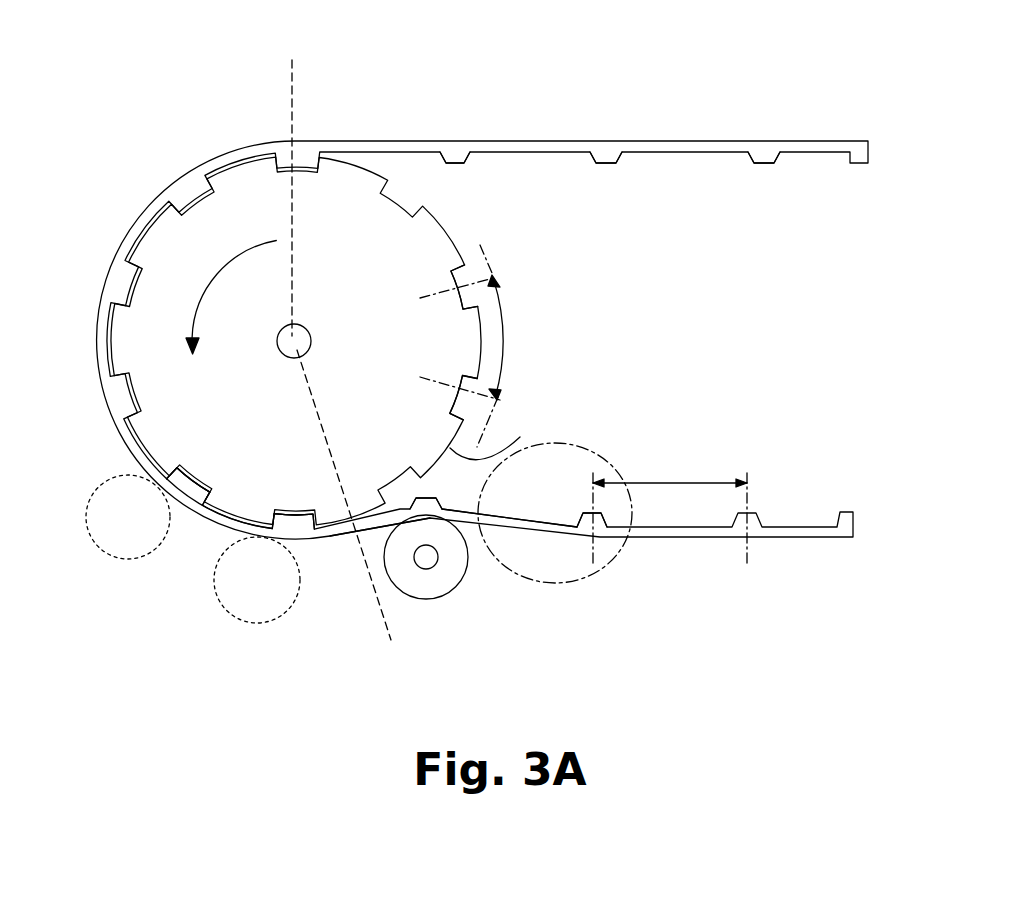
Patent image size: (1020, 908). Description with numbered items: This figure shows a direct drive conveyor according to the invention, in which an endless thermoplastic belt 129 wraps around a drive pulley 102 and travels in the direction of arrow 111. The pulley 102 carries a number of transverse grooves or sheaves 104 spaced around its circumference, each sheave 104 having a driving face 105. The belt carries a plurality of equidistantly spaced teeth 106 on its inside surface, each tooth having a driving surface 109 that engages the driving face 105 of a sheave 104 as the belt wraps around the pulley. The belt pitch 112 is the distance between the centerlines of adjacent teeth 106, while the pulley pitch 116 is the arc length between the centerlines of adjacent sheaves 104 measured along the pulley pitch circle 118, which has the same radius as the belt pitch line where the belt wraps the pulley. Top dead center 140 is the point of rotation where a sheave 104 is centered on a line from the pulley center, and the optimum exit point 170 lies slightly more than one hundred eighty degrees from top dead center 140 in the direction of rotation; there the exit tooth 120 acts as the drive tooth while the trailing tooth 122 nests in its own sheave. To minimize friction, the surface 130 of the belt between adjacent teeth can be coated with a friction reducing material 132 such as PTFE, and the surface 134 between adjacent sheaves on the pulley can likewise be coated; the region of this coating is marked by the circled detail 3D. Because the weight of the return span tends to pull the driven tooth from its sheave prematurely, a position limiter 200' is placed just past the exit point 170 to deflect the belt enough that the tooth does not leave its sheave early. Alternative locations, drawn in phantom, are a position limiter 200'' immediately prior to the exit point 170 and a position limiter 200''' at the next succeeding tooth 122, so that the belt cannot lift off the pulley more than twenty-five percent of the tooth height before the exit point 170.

The pulley 102 is at (352, 283).
The sheaves 104 is at (463, 292).
The driving face 105 is at (170, 468).
The teeth 106 is at (610, 158).
The driving surface 109 is at (176, 490).
The arrow 111 is at (226, 270).
The pitch 112 is at (685, 481).
The pulley pitch 116 is at (503, 337).
The pitch circle 118 is at (487, 263).
The exit tooth 120 is at (297, 506).
The trailing tooth 122 is at (181, 480).
The belt 129 is at (585, 134).
The belt surface 130 is at (553, 526).
The friction reducing material 132 is at (497, 518).
The pulley surface 134 is at (502, 435).
The top dead center 140 is at (302, 76).
The exit point 170 is at (378, 638).
The position limiter 200' is at (461, 563).
The position limiter 200'' is at (250, 608).
The position limiter 200''' is at (120, 549).
The detail view 3D is at (600, 582).